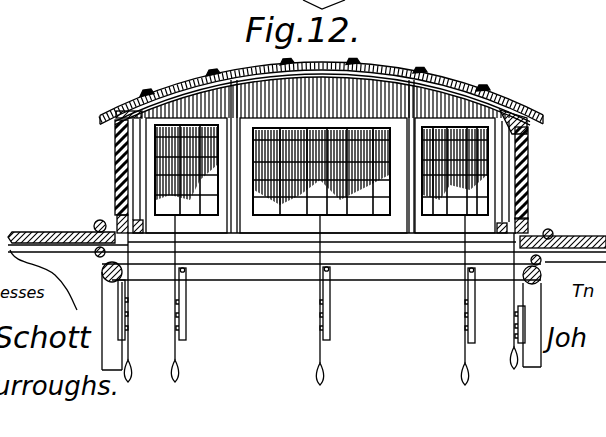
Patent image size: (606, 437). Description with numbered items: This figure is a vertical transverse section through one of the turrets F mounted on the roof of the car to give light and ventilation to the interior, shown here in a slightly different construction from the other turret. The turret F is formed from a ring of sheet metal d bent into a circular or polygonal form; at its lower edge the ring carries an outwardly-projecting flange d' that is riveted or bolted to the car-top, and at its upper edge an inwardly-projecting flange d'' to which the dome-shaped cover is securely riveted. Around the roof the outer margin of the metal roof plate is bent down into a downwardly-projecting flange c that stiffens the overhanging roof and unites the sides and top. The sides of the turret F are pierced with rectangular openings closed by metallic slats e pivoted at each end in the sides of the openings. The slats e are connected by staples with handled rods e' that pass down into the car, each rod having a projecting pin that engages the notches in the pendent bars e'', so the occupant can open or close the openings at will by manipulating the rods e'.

The turret F is at (321, 83).
The downwardly-projecting flange c is at (489, 104).
The ring of sheet metal d is at (307, 237).
The outwardly-projecting flange d' is at (563, 237).
The inwardly-projecting flange d'' is at (531, 124).
The metallic slats e is at (295, 175).
The handled rods e' is at (321, 300).
The pendent bars e'' is at (321, 305).